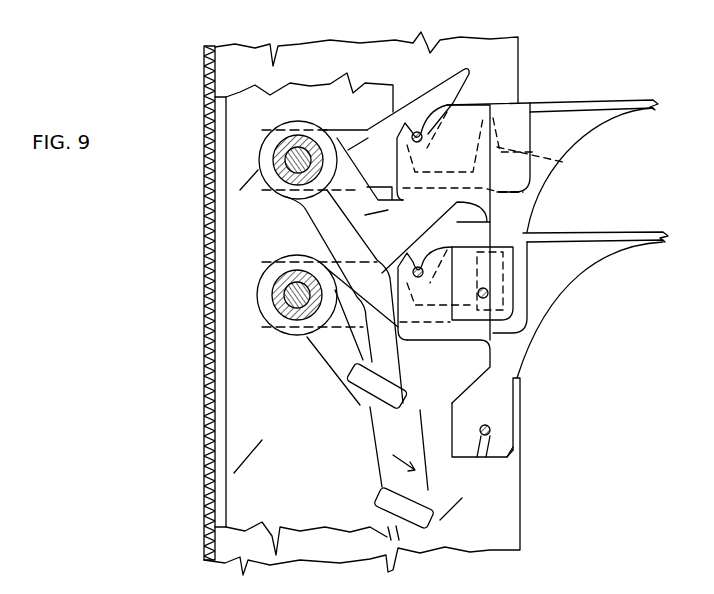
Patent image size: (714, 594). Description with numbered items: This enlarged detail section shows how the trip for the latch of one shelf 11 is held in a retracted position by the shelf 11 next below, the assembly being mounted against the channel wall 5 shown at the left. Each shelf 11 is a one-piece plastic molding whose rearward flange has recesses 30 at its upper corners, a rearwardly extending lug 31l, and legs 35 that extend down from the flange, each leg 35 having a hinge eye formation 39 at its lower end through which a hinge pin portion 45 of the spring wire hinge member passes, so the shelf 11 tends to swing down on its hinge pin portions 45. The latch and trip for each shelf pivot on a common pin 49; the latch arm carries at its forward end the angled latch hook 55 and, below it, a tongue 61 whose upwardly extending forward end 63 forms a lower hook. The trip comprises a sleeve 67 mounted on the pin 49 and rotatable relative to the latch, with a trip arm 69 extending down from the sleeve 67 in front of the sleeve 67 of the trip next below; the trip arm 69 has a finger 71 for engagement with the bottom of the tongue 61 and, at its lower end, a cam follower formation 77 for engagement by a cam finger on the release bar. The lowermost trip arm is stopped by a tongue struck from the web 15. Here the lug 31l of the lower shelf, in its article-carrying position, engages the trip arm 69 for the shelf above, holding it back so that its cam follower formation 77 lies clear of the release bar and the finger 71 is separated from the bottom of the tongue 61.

The wall 5 is at (203, 239).
The web 15 is at (228, 409).
The pin 49 is at (290, 150).
The sleeve 67 is at (318, 124).
The trip arm 69 is at (300, 214).
The cam follower formation 77 is at (348, 405).
The latch hook 55 is at (468, 67).
The finger 71 is at (490, 222).
The shelf 11 is at (625, 97).
The recess 30 is at (528, 128).
The forward end 63 is at (567, 163).
The tongue 61 is at (542, 192).
The lug 31l is at (410, 348).
The leg 35 is at (500, 408).
The hinge pin portion 45 is at (490, 430).
The hinge eye formation 39 is at (513, 455).